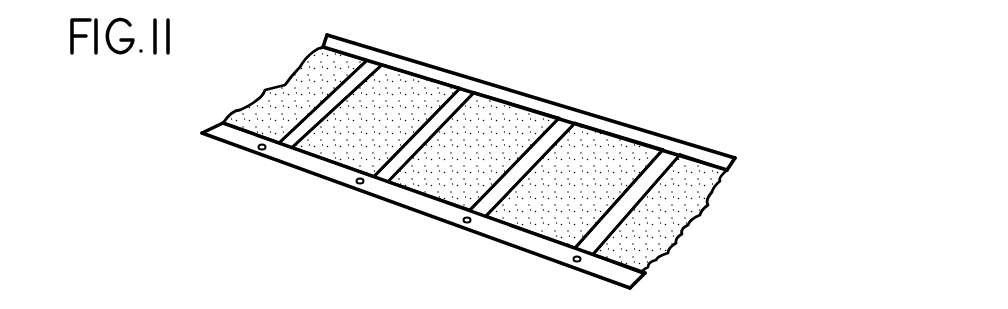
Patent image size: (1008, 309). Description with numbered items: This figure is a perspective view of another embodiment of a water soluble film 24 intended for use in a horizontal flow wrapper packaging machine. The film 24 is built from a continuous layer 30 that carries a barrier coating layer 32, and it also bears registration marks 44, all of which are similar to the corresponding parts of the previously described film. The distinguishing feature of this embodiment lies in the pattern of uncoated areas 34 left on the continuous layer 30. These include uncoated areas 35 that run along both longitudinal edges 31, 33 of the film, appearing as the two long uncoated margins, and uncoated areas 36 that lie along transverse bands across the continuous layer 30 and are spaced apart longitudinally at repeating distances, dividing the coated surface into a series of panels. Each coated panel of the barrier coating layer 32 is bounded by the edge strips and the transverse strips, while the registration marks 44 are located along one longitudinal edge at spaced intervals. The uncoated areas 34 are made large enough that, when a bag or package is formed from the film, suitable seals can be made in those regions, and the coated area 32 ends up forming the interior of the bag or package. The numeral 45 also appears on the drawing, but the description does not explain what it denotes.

The panel assembly 24 is at (634, 21).
The frame end edge 30 is at (796, 106).
The bottom side rail 31 is at (302, 174).
The pocket 32 is at (283, 94).
The cross member 33 is at (388, 5).
The cross member 34 is at (463, 81).
The side rail 35 is at (481, 21).
The pocket fold line 36 is at (556, 136).
The fastener hole 44 is at (252, 152).
The panel 45 is at (585, 230).